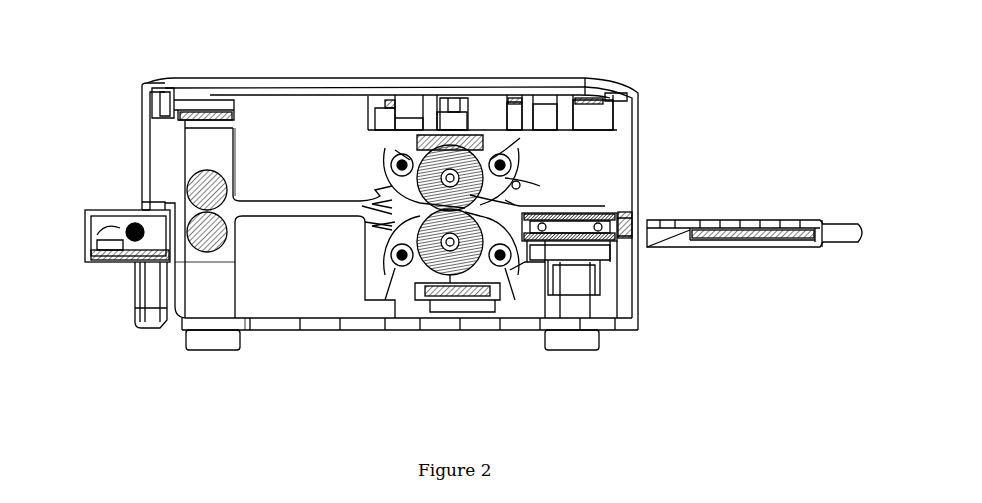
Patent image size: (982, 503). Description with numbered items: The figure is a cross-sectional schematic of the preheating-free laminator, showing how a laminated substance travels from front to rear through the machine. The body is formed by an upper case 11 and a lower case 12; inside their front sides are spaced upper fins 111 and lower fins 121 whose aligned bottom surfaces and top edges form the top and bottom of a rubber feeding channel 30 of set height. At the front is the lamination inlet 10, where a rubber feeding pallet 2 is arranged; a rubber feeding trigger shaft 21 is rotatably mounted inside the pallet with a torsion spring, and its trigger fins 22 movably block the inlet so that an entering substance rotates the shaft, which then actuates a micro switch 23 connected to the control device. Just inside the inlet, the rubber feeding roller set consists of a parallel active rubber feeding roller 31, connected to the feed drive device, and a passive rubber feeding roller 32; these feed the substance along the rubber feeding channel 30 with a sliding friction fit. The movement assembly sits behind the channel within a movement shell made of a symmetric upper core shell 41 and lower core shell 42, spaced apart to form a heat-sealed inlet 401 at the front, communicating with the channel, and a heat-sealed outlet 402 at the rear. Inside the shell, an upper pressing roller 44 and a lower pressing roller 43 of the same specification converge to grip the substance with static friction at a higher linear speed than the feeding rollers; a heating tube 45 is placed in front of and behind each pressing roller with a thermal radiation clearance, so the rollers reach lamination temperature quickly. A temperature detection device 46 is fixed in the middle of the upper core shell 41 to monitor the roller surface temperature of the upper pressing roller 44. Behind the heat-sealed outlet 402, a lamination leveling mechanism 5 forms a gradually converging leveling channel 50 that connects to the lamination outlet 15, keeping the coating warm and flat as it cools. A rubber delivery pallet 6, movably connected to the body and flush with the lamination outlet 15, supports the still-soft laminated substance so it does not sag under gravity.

The rubber feeding pallet 2 is at (86, 236).
The lamination leveling mechanism 5 is at (600, 200).
The rubber delivery pallet 6 is at (782, 218).
The lamination inlet 10 is at (128, 205).
The upper case 11 is at (226, 80).
The lower case 12 is at (305, 332).
The lamination outlet 15 is at (636, 214).
The rubber feeding trigger shaft 21 is at (138, 262).
The trigger fin 22 is at (148, 222).
The micro switch 23 is at (108, 262).
The rubber feeding channel 30 is at (303, 218).
The active rubber feeding roller 31 is at (207, 253).
The passive rubber feeding roller 32 is at (207, 172).
The upper core shell 41 is at (407, 112).
The lower core shell 42 is at (397, 302).
The lower pressing roller 43 is at (456, 302).
The upper pressing roller 44 is at (488, 112).
The heating tube 45 is at (370, 112).
The temperature detection device 46 is at (447, 112).
The leveling channel 50 is at (540, 240).
The upper fin 111 is at (320, 110).
The lower fin 121 is at (275, 275).
The heat-sealed inlet 401 is at (362, 204).
The heat-sealed outlet 402 is at (505, 198).